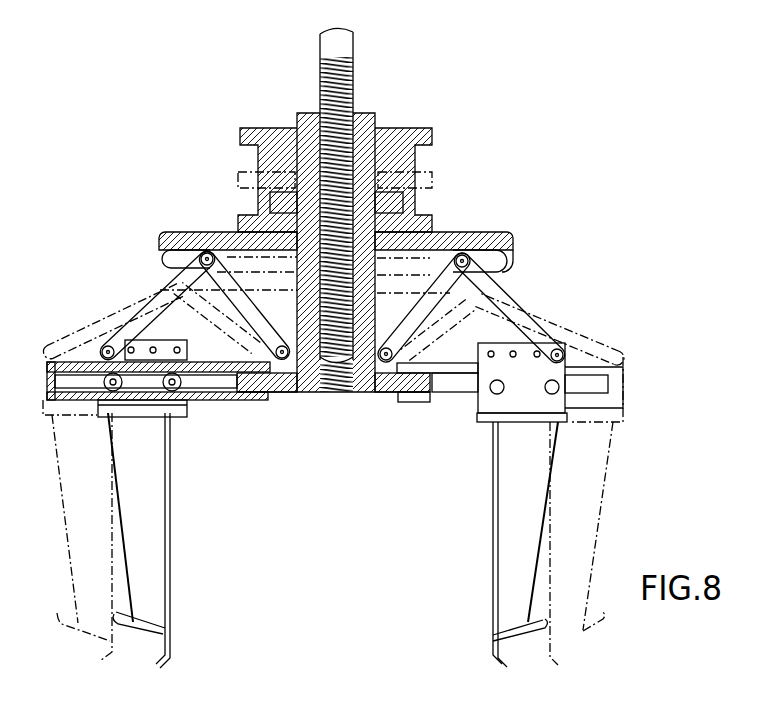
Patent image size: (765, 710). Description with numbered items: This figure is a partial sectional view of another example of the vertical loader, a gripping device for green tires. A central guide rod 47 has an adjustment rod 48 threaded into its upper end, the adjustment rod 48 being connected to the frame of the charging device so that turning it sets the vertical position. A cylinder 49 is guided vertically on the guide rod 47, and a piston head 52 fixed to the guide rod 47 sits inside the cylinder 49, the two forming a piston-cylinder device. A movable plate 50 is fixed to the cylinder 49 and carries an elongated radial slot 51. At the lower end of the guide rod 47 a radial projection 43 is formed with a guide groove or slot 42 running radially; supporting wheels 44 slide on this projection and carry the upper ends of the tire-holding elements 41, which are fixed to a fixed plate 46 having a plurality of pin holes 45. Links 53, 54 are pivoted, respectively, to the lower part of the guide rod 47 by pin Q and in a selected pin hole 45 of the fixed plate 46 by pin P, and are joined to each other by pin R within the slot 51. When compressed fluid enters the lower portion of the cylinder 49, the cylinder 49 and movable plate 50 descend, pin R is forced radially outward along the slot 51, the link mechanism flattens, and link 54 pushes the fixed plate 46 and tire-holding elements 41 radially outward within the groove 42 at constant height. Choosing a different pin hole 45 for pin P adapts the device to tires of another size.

The tire-holding elements 41 is at (58, 490).
The guide groove or slot 42 is at (203, 383).
The radial projection 43 is at (237, 396).
The supporting wheels 44 is at (148, 390).
The pin holes 45 is at (157, 347).
The fixed plate 46 is at (187, 362).
The guide rod 47 is at (376, 117).
The adjustment rod 48 is at (356, 47).
The cylinder 49 is at (240, 136).
The movable plate 50 is at (183, 230).
The elongated radial slot 51 is at (163, 260).
The piston head 52 is at (273, 200).
The link 53 is at (157, 297).
The link 54 is at (257, 308).
The pin P is at (103, 340).
The pin Q is at (282, 373).
The pin R is at (210, 250).